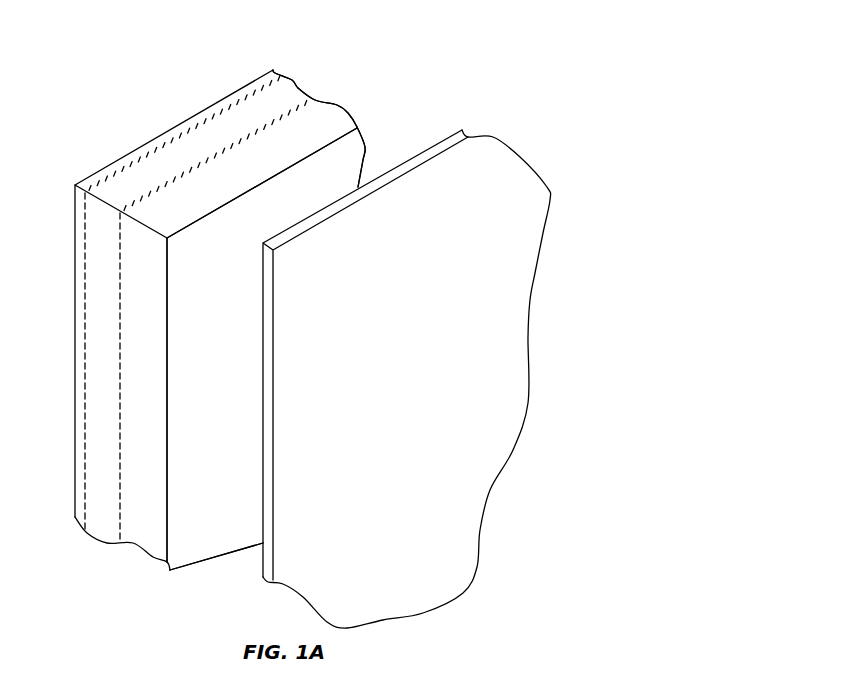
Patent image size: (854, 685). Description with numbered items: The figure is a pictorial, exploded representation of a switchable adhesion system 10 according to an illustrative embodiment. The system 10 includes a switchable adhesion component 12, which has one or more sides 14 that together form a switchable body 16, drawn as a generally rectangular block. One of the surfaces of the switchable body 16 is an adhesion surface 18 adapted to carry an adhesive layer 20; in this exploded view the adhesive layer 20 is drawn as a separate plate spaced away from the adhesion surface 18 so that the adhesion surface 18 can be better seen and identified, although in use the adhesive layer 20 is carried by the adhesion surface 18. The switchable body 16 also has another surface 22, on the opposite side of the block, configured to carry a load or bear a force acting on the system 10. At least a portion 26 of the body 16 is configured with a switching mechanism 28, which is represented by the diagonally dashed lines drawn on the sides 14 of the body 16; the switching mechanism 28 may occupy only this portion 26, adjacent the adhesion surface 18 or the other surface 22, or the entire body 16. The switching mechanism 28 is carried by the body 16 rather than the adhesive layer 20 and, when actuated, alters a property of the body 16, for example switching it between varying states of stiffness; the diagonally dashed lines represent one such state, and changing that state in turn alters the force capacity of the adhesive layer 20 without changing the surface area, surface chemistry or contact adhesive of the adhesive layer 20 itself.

The switchable adhesion system 10 is at (288, 323).
The switchable adhesion component 12 is at (222, 307).
The sides 14 is at (338, 112).
The switchable body 16 is at (366, 148).
The adhesion surface 18 is at (202, 345).
The adhesive layer 20 is at (370, 380).
The other surface 22 is at (183, 122).
The portion 26 is at (297, 87).
The switching mechanism 28 is at (120, 300).